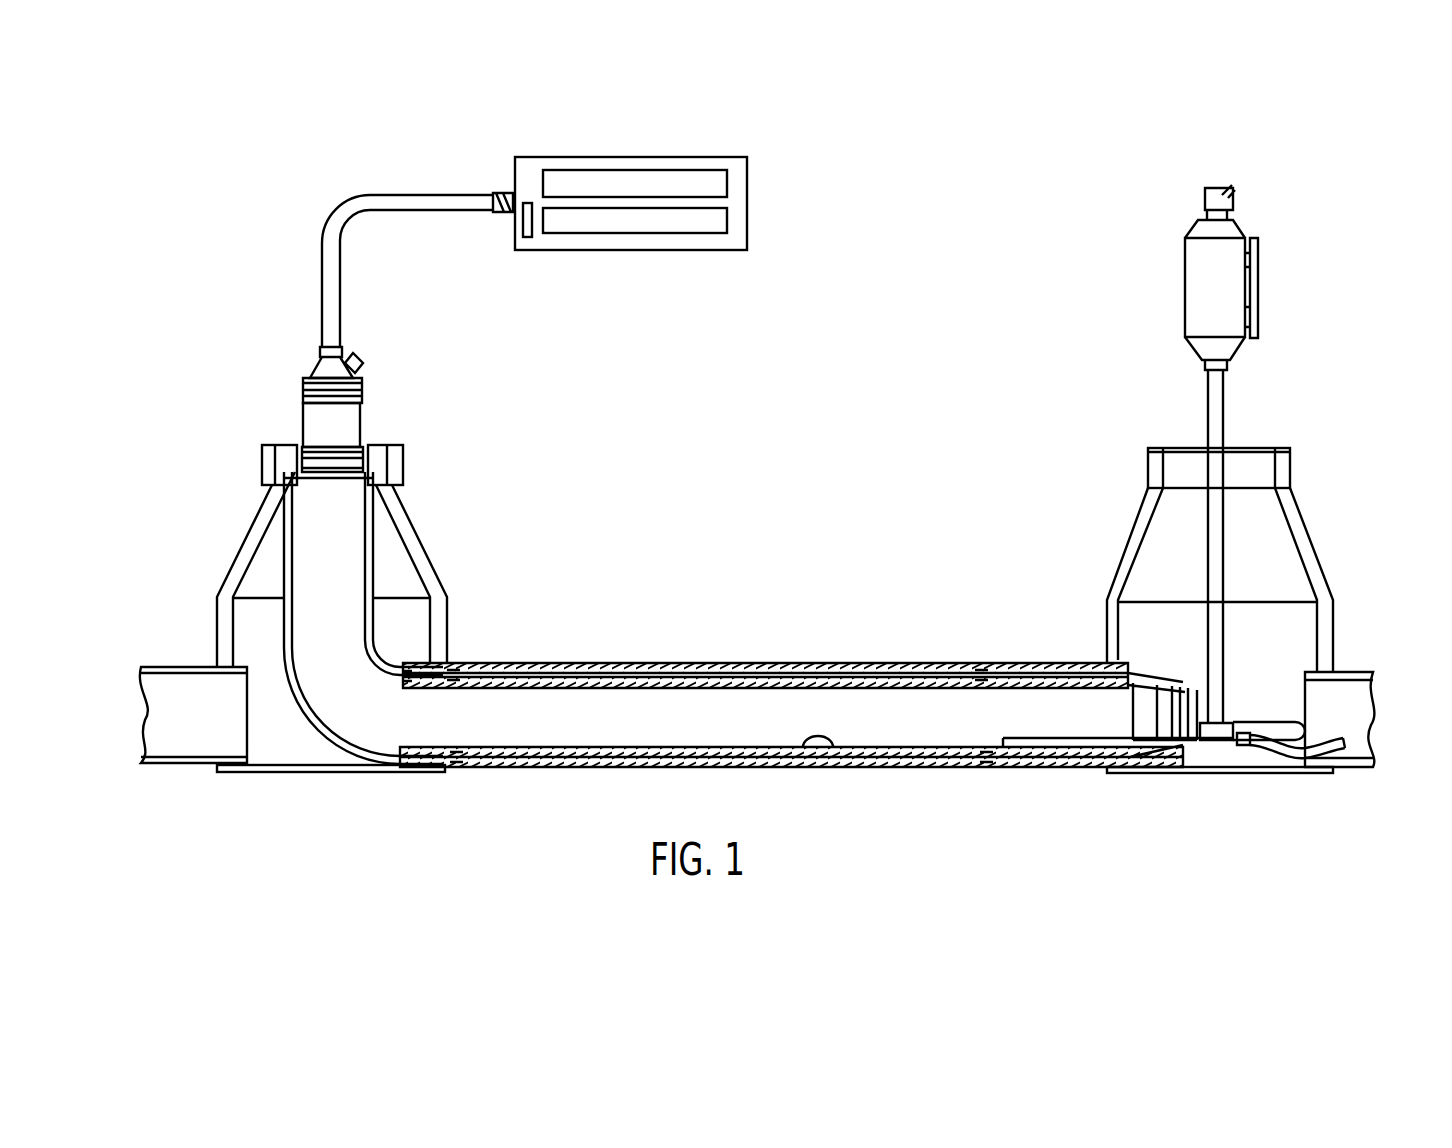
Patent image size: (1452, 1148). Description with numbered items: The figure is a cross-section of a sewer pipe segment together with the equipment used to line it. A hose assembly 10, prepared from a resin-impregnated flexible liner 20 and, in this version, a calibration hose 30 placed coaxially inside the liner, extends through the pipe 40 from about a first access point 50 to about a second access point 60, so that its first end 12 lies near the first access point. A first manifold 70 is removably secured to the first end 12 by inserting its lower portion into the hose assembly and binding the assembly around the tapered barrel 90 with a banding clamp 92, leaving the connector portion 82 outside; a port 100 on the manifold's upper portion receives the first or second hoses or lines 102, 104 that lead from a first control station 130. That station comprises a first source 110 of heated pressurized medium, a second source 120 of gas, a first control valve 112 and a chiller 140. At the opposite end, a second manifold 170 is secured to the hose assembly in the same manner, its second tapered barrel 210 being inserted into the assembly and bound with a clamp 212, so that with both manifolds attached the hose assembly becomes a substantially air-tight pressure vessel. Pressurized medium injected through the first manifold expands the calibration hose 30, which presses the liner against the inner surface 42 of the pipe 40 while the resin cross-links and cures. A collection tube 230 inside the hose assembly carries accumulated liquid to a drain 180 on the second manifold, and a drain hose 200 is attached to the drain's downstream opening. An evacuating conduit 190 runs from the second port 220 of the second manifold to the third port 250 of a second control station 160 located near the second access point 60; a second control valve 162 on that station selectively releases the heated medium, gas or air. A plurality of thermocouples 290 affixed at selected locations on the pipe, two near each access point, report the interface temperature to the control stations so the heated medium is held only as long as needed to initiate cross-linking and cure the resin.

The hose assembly 10 is at (627, 645).
The first end 12 is at (298, 448).
The flexible liner 20 is at (675, 770).
The calibration hose 30 is at (840, 750).
The pipe 40 is at (762, 665).
The inner surface 42 is at (858, 665).
The first access point 50 is at (216, 638).
The second access point 60 is at (1272, 652).
The first manifold 70 is at (345, 430).
The connector portion 82 is at (363, 396).
The tapered barrel 90 is at (345, 464).
The banding clamp 92 is at (302, 478).
The port 100 is at (318, 352).
The first hose or line 102 is at (335, 285).
The second hose or line 104 is at (431, 202).
The first source of heated pressurized medium 110 is at (552, 187).
The first control valve 112 is at (493, 198).
The second source of gas 120 is at (662, 220).
The first control station 130 is at (748, 203).
The chiller 140 is at (528, 238).
The second control station 160 is at (1187, 297).
The second control valve 162 is at (1213, 207).
The second manifold 170 is at (1147, 723).
The drain 180 is at (1237, 740).
The evacuating conduit 190 is at (1207, 437).
The drain hose 200 is at (1317, 753).
The second tapered barrel 210 is at (1167, 723).
The clamp 212 is at (1188, 720).
The second port 220 is at (1227, 723).
The collection tube 230 is at (1072, 755).
The third port 250 is at (1233, 362).
The thermocouples 290 is at (453, 665).